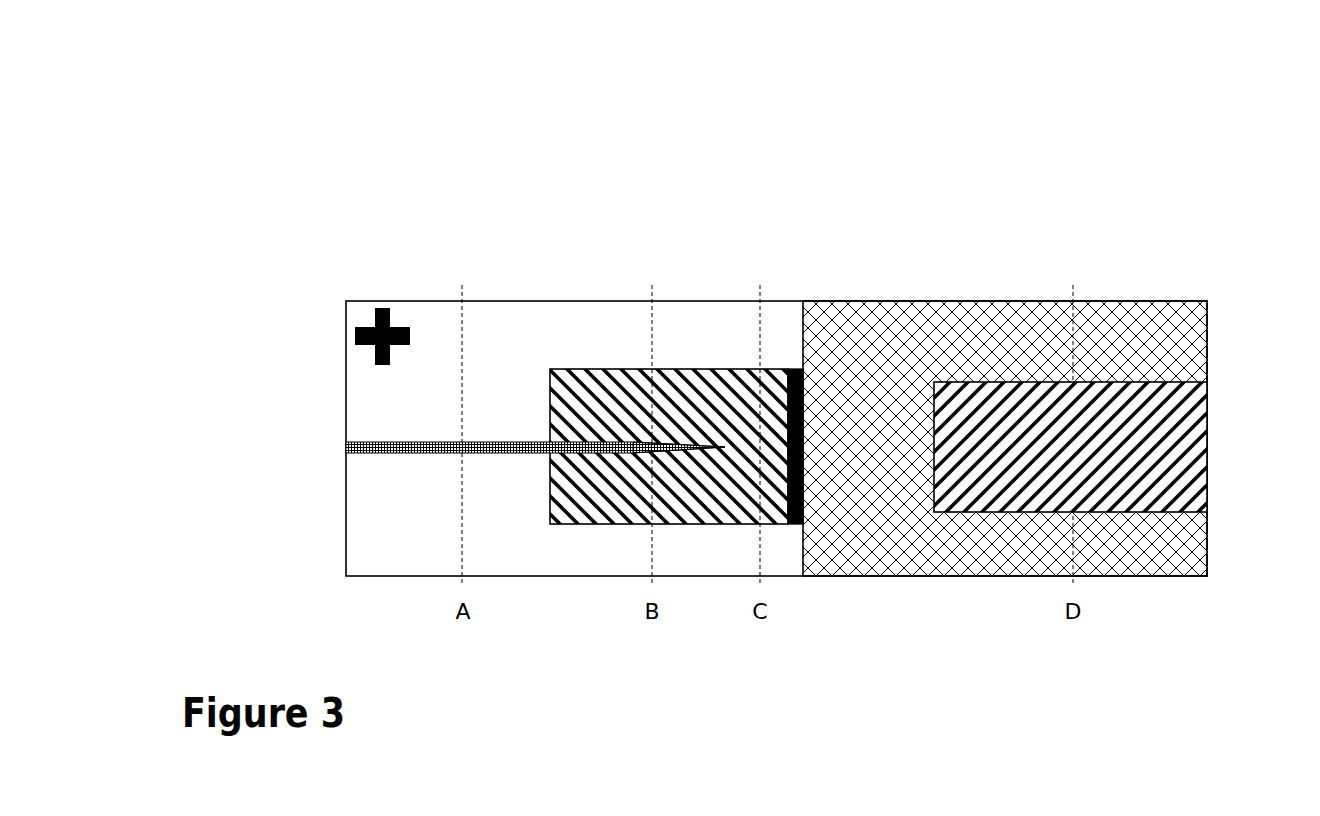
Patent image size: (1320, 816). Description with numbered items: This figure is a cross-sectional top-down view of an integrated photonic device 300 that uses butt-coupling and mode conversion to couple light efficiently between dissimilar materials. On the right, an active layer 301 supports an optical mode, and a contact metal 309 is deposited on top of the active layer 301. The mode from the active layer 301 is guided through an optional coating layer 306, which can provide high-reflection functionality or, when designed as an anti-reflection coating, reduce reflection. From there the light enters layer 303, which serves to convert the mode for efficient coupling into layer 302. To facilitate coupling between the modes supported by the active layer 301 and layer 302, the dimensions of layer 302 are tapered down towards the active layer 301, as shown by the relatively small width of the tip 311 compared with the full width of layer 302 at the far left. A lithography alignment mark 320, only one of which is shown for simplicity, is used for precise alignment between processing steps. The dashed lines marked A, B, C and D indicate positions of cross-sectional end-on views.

The integrated photonic device 300 is at (289, 109).
The active layer 301 is at (977, 301).
The layer 302 is at (443, 438).
The layer 303 is at (565, 369).
The optional coating layer 306 is at (796, 369).
The contact metal 309 is at (1208, 385).
The tip 311 is at (725, 446).
The lithography alignment mark 320 is at (375, 325).